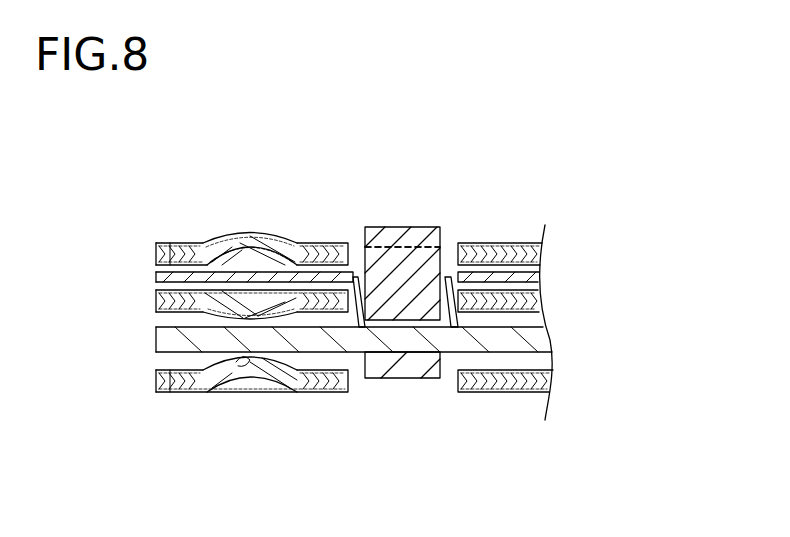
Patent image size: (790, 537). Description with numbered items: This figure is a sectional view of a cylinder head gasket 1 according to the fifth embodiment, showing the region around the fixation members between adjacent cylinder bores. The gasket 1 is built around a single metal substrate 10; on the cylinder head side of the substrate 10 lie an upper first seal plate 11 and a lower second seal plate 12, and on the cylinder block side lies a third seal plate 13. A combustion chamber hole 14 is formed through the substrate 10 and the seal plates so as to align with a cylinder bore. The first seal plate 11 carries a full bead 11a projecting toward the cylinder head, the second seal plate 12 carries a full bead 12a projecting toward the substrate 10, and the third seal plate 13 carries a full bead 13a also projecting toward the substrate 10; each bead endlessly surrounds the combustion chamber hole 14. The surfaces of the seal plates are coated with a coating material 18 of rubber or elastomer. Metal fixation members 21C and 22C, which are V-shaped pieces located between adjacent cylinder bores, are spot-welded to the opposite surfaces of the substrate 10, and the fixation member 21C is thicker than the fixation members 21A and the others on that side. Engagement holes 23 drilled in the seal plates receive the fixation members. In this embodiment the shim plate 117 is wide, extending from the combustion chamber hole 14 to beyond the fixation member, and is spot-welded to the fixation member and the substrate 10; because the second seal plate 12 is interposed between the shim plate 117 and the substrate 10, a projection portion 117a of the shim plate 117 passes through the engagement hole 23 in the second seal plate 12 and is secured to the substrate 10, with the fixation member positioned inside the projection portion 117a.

The cylinder head gasket 1 is at (553, 341).
The metal substrate 10 is at (538, 337).
The first seal plate 11 is at (393, 210).
The full bead 11a is at (252, 233).
The second seal plate 12 is at (383, 353).
The full bead 12a is at (273, 318).
The third seal plate 13 is at (394, 413).
The full bead 13a is at (222, 386).
The combustion chamber hole 14 is at (156, 253).
The coating material 18 is at (205, 298).
The fixation member 21A is at (443, 228).
The fixation member 21C is at (405, 227).
The fixation member 22C is at (422, 380).
The engagement hole 23 is at (364, 290).
The shim plate 117 is at (294, 256).
The projection portion 117a is at (449, 322).